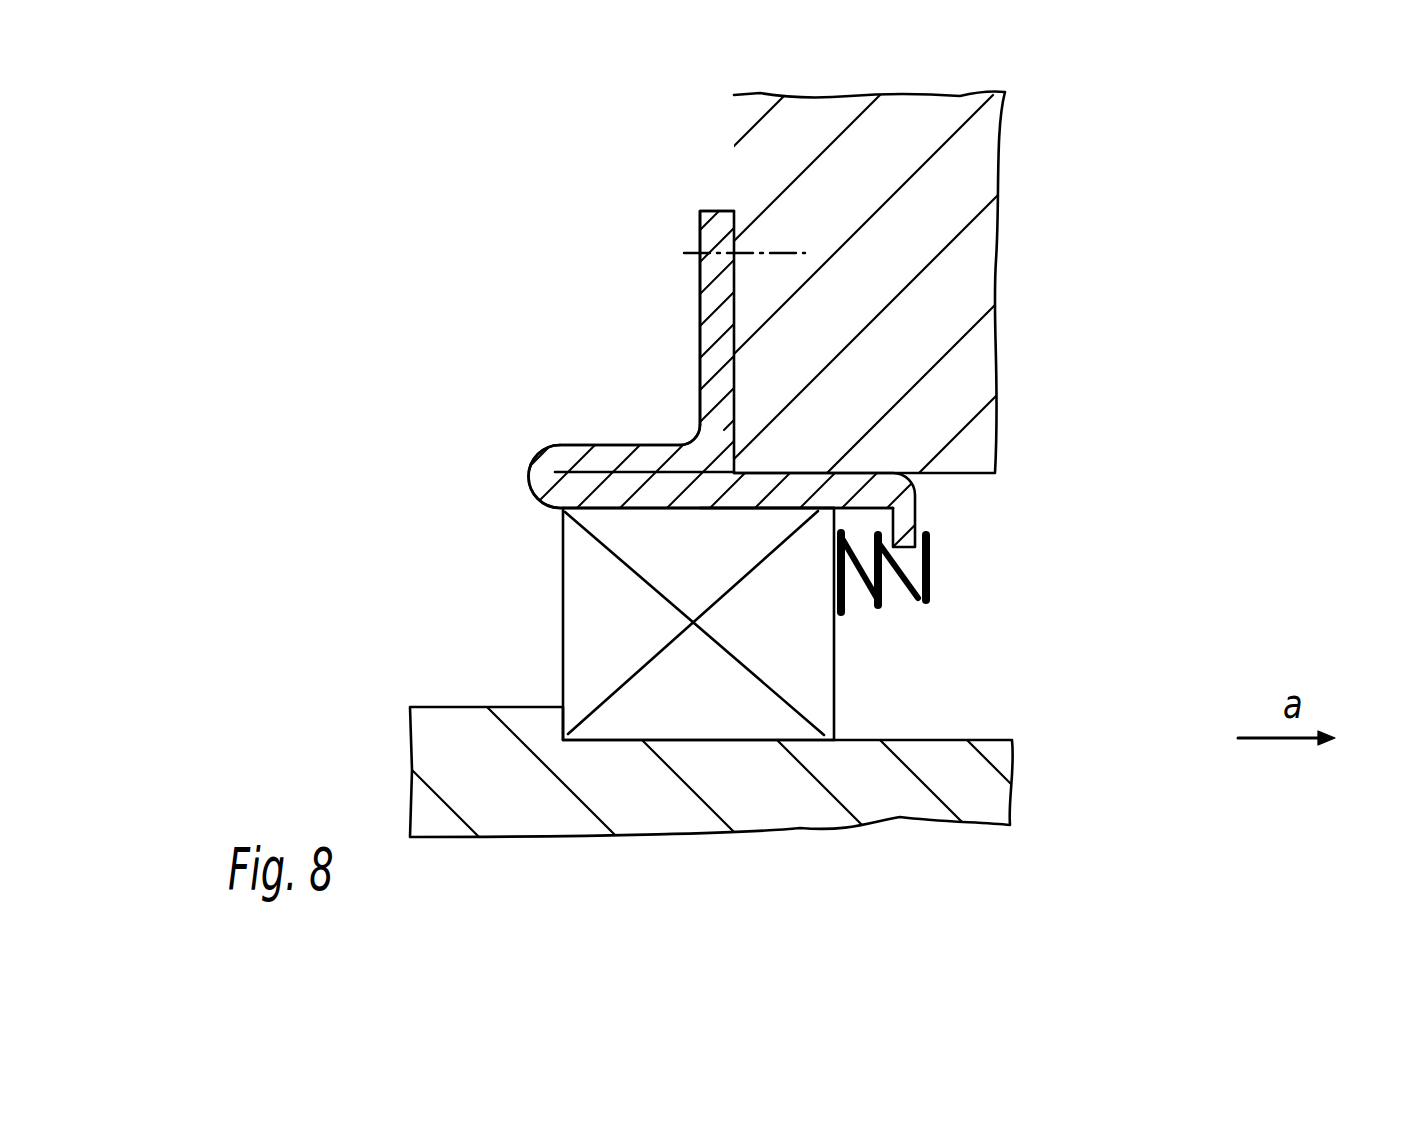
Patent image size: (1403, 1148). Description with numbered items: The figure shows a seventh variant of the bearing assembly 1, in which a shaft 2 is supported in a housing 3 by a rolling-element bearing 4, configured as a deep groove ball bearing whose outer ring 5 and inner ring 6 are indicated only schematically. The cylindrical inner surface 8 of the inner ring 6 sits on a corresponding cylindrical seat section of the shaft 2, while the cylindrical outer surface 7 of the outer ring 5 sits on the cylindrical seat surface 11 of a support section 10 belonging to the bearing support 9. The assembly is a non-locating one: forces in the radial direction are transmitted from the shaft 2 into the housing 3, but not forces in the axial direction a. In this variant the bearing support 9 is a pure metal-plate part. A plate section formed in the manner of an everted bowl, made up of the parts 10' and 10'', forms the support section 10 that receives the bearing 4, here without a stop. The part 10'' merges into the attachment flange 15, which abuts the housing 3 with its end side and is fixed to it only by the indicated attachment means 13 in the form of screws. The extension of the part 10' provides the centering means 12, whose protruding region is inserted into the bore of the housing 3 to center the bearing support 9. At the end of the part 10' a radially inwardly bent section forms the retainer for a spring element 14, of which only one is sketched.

The bearing assembly 1 is at (405, 226).
The shaft 2 is at (983, 802).
The housing 3 is at (962, 232).
The rolling-element bearing 4 is at (614, 616).
The outer ring 5 is at (648, 520).
The inner ring 6 is at (681, 725).
The cylindrical outer surface 7 is at (617, 502).
The cylindrical inner surface 8 is at (756, 756).
The bearing support 9 is at (708, 392).
The support section 10 is at (643, 414).
The part 10' is at (714, 713).
The part 10'' is at (620, 388).
The cylindrical seat surface 11 is at (720, 510).
The centering means 12 is at (927, 480).
The attachment means 13 is at (655, 253).
The spring element 14 is at (883, 593).
The attachment flange 15 is at (718, 232).